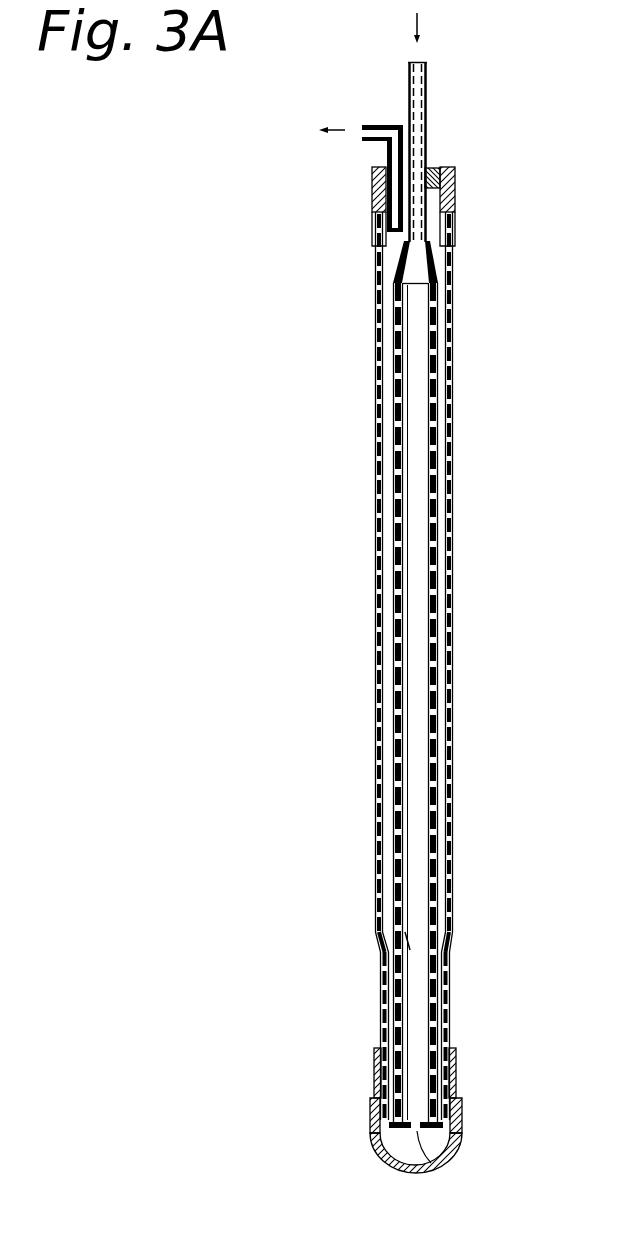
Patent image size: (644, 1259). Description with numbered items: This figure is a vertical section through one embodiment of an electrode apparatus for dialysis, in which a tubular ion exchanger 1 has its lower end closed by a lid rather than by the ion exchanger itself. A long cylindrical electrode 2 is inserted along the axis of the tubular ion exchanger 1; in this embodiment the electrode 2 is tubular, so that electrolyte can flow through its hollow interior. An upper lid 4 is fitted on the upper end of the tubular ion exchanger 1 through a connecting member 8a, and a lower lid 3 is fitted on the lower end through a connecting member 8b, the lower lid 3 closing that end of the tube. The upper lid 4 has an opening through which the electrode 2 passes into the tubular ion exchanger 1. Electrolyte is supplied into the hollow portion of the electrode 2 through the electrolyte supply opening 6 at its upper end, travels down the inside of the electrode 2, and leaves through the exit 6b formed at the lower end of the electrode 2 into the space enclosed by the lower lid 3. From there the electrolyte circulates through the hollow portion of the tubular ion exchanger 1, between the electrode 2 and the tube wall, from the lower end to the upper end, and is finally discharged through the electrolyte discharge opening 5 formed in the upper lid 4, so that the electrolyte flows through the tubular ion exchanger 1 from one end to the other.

The tubular ion exchanger 1 is at (453, 333).
The cylindrical electrode 2 is at (440, 430).
The lower lid 3 is at (463, 1128).
The upper lid 4 is at (432, 168).
The electrolyte discharge opening 5 is at (378, 124).
The electrolyte supply opening 6 is at (427, 60).
The electrolyte supply opening exit 6b is at (450, 1166).
The connecting member 8a is at (455, 188).
The connecting member 8b is at (458, 1055).